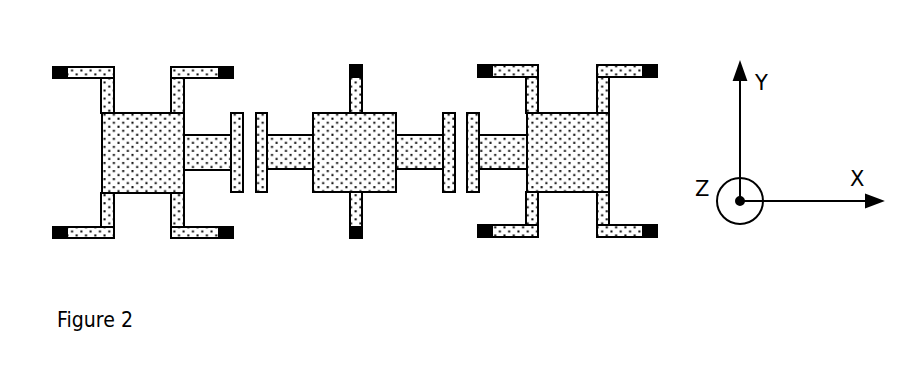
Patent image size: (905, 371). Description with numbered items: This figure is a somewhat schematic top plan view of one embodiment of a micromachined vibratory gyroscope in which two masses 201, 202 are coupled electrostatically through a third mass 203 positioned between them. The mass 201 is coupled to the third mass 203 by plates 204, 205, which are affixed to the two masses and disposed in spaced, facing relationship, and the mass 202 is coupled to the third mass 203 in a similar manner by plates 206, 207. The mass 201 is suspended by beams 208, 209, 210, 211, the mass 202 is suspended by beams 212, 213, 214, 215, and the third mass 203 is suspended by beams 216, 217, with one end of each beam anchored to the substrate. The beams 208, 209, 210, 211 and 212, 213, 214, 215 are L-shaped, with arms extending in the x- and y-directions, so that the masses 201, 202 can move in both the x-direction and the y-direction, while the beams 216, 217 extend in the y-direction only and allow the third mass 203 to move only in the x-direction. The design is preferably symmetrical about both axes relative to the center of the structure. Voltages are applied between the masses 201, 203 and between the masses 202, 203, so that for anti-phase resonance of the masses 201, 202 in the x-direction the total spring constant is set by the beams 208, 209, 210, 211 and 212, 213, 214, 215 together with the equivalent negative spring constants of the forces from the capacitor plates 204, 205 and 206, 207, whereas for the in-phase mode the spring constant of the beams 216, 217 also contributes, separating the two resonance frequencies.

The mass 201 is at (125, 160).
The mass 202 is at (587, 157).
The third mass 203 is at (337, 135).
The plate 204 is at (233, 143).
The plate 205 is at (270, 150).
The plate 206 is at (443, 143).
The plate 207 is at (480, 145).
The beam 208 is at (90, 67).
The beam 209 is at (207, 67).
The beam 210 is at (88, 238).
The beam 211 is at (203, 238).
The beam 212 is at (528, 63).
The beam 213 is at (633, 63).
The beam 214 is at (515, 237).
The beam 215 is at (635, 237).
The beam 216 is at (360, 88).
The beam 217 is at (362, 212).